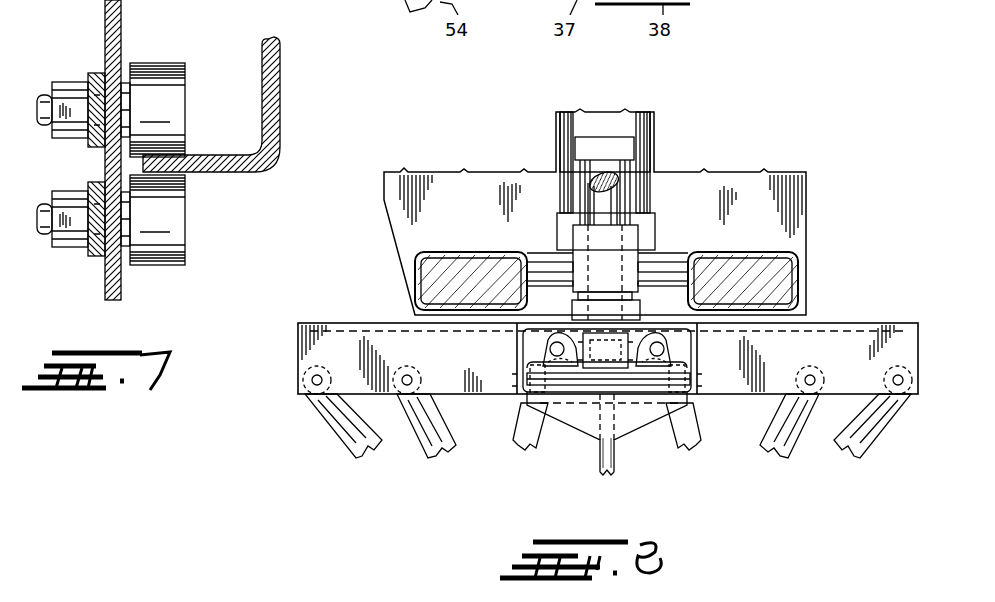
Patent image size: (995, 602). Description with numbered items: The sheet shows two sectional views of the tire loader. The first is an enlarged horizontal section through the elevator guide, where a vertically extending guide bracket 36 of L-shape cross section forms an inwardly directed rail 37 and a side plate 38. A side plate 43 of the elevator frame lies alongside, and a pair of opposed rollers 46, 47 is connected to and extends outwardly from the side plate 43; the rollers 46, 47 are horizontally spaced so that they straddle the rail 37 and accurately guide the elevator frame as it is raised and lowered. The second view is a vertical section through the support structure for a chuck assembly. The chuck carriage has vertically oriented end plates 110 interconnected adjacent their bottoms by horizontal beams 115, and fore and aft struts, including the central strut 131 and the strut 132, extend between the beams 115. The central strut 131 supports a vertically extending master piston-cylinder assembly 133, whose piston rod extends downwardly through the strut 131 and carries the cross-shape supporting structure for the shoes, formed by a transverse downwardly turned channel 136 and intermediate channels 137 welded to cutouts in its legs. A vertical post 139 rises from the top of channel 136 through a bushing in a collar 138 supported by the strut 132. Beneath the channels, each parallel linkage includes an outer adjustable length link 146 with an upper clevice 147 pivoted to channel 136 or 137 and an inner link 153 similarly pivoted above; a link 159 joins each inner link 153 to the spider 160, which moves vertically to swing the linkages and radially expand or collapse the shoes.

In FIG. 7, the side plate 43 is at (105, 18).
In FIG. 7, the roller 47 is at (185, 63).
In FIG. 7, the roller 46 is at (178, 222).
In FIG. 7, the guide bracket 36 is at (245, 110).
In FIG. 7, the side plate 38 is at (280, 90).
In FIG. 7, the rail 37 is at (205, 172).
In FIG. 8, the end plate 110 is at (445, 172).
In FIG. 8, the horizontal beam 115 is at (455, 252).
In FIG. 8, the master piston-cylinder assembly 133 is at (650, 126).
In FIG. 8, the strut 132 is at (660, 258).
In FIG. 8, the post 139 is at (618, 196).
In FIG. 8, the collar 138 is at (575, 238).
In FIG. 8, the central strut 131 is at (670, 277).
In FIG. 8, the intermediate channel 137 is at (340, 330).
In FIG. 8, the transverse channel 136 is at (517, 356).
In FIG. 8, the spider 160 is at (665, 340).
In FIG. 8, the upper clevice 147 is at (635, 415).
In FIG. 8, the link 159 is at (541, 447).
In FIG. 8, the outer adjustable length link 146 is at (350, 445).
In FIG. 8, the inner link 153 is at (428, 452).